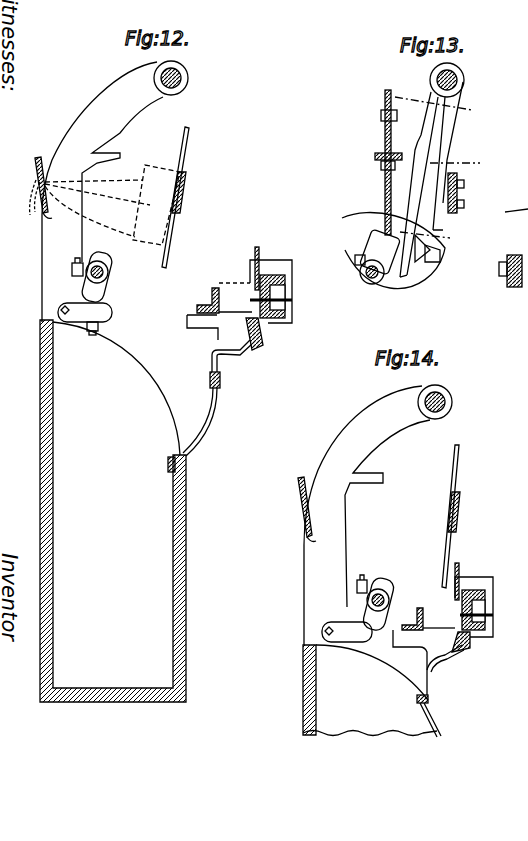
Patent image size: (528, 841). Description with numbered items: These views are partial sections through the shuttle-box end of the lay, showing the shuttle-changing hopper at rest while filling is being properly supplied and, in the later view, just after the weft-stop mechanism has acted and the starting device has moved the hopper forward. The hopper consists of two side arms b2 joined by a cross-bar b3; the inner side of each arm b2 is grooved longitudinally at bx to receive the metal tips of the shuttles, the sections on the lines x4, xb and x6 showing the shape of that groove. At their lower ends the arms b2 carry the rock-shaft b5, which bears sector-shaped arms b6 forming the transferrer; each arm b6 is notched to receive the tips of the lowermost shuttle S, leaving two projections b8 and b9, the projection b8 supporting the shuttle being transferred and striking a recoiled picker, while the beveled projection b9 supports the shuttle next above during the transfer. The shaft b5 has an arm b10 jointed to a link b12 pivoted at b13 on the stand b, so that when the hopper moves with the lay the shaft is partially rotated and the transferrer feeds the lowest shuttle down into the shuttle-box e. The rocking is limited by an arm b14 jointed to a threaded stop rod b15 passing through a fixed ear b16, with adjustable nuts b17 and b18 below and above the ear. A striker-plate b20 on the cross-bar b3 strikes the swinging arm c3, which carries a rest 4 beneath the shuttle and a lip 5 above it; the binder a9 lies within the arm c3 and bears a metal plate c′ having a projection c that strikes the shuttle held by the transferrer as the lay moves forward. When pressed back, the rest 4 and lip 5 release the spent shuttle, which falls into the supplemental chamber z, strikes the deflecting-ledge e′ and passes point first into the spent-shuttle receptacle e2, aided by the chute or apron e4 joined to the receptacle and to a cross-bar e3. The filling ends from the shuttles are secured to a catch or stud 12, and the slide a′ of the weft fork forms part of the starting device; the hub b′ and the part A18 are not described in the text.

In FIG. 12, the catch or stud 12 is at (34, 187).
In FIG. 14, the catch or stud 12 is at (296, 509).
In FIG. 12, the stand b is at (102, 192).
In FIG. 14, the stand b is at (367, 515).
In FIG. 12, the pivot hub of arm b′ is at (188, 72).
In FIG. 13, the pivot hub of arm b′ is at (464, 78).
In FIG. 14, the pivot hub of arm b′ is at (448, 400).
In FIG. 12, the striker-plate b20 is at (189, 130).
In FIG. 14, the striker-plate b20 is at (459, 450).
In FIG. 12, the hopper arm or side piece b2 is at (186, 178).
In FIG. 14, the hopper arm or side piece b2 is at (460, 500).
In FIG. 12, the lowermost shuttle S is at (112, 209).
In FIG. 13, the lowermost shuttle S is at (438, 255).
In FIG. 12, the rock-shaft b5 is at (108, 272).
In FIG. 13, the rock-shaft b5 is at (373, 284).
In FIG. 14, the rock-shaft b5 is at (364, 609).
In FIG. 12, the slide of the weft fork or feeler a′ is at (82, 288).
In FIG. 13, the slide of the weft fork or feeler a′ is at (522, 244).
In FIG. 14, the slide of the weft fork or feeler a′ is at (360, 592).
In FIG. 12, the arm of rock-shaft b10 is at (112, 290).
In FIG. 12, the pivot of link b13 is at (60, 317).
In FIG. 12, the link b12 is at (74, 320).
In FIG. 12, the shuttle-box e is at (228, 293).
In FIG. 14, the shuttle-box e is at (418, 612).
In FIG. 12, the lip 5 is at (255, 277).
In FIG. 14, the lip 5 is at (458, 600).
In FIG. 12, the swinging arm c3 is at (292, 283).
In FIG. 14, the swinging arm c3 is at (495, 590).
In FIG. 12, the binder a9 is at (286, 312).
In FIG. 14, the binder a9 is at (495, 624).
In FIG. 12, the rest 4 is at (248, 320).
In FIG. 14, the rest 4 is at (465, 645).
In FIG. 12, the supplemental chamber z is at (223, 333).
In FIG. 14, the supplemental chamber z is at (372, 683).
In FIG. 12, the deflecting-ledge e′ is at (228, 355).
In FIG. 14, the deflecting-ledge e′ is at (432, 682).
In FIG. 12, the cross-bar e3 is at (220, 378).
In FIG. 12, the chute or apron e4 is at (208, 422).
In FIG. 12, the spent-shuttle receptacle e2 is at (186, 472).
In FIG. 13, the section line x4 is at (442, 107).
In FIG. 13, the longitudinal groove bx is at (438, 142).
In FIG. 13, the adjustable nut b18 is at (380, 113).
In FIG. 13, the fixed ear b16 is at (375, 155).
In FIG. 13, the section line xb is at (462, 162).
In FIG. 13, the adjustable nut b17 is at (380, 170).
In FIG. 13, the cross-bar b3 is at (458, 193).
In FIG. 13, the stop rod b15 is at (385, 190).
In FIG. 13, the projection of transferrer arm b9 is at (386, 246).
In FIG. 13, the sector-shaped arm b6 is at (367, 245).
In FIG. 13, the section line x6 is at (432, 237).
In FIG. 13, the arm of rock-shaft b14 is at (368, 262).
In FIG. 13, the projection of transferrer arm b8 is at (432, 262).
In FIG. 14, the projection on binder plate c is at (459, 570).
In FIG. 14, the metal plate c′ is at (462, 612).
In FIG. 14, the frame part A18 is at (485, 650).